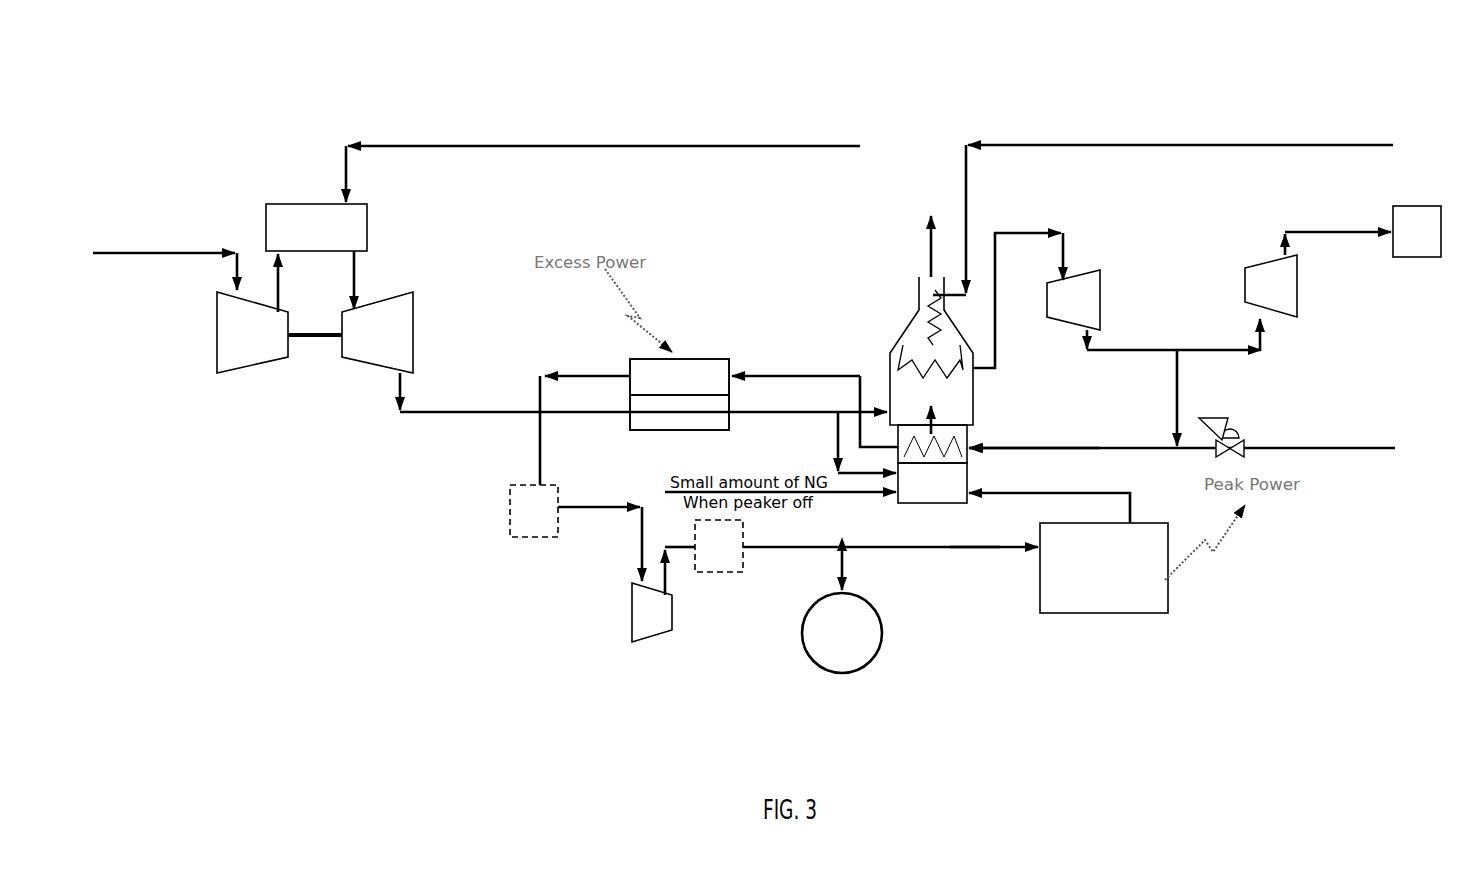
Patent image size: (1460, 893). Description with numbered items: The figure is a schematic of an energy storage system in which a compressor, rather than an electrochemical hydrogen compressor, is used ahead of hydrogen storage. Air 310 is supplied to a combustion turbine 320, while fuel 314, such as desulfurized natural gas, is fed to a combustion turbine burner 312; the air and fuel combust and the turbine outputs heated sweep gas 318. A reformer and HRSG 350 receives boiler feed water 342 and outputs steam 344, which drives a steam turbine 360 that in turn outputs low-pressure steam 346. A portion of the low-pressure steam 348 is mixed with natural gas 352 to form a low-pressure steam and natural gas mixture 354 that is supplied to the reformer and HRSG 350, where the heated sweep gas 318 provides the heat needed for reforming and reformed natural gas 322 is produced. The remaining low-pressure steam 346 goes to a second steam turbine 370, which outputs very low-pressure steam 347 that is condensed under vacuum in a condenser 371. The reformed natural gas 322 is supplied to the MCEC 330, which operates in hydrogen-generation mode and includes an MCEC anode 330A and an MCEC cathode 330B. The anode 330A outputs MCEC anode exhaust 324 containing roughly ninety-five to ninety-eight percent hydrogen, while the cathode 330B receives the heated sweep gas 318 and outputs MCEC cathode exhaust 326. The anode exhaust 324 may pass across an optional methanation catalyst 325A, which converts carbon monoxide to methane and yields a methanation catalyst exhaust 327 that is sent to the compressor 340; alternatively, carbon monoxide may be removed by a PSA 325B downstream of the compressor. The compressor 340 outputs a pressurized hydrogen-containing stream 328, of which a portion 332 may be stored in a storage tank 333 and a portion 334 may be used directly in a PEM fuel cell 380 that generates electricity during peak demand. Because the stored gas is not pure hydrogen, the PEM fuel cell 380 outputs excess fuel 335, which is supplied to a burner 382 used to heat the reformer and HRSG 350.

The air 310 is at (146, 251).
The combustion turbine burner 312 is at (302, 199).
The fuel 314 is at (480, 144).
The heated sweep gas 318 is at (488, 413).
The combustion turbine 320 is at (300, 398).
The reformed natural gas 322 is at (816, 376).
The MCEC anode exhaust 324 is at (539, 460).
The methanation catalyst 325A is at (510, 510).
The PSA 325B is at (720, 572).
The MCEC cathode exhaust 326 is at (782, 416).
The methanation catalyst exhaust 327 is at (584, 510).
The pressurized hydrogen-containing stream 328 is at (776, 548).
The MCEC 330 is at (710, 359).
The MCEC anode 330A is at (652, 363).
The MCEC cathode 330B is at (683, 417).
The portion of the hydrogen-containing stream 332 is at (848, 573).
The storage tank 333 is at (882, 628).
The portion of the hydrogen-containing stream 334 is at (978, 548).
The excess fuel 335 is at (1136, 500).
The compressor 340 is at (644, 641).
The boiler feed water 342 is at (1103, 144).
The steam 344 is at (1034, 232).
The low-pressure steam 346 is at (1158, 350).
The very low-pressure steam 347 is at (1358, 234).
The portion of the low-pressure steam 348 is at (1176, 402).
The reformer and HRSG 350 is at (906, 342).
The natural gas 352 is at (1375, 450).
The low-pressure steam and natural gas mixture 354 is at (1064, 447).
The steam turbine 360 is at (1102, 284).
The second steam turbine 370 is at (1254, 266).
The condenser 371 is at (1402, 207).
The PEM fuel cell 380 is at (1040, 590).
The burner 382 is at (967, 477).